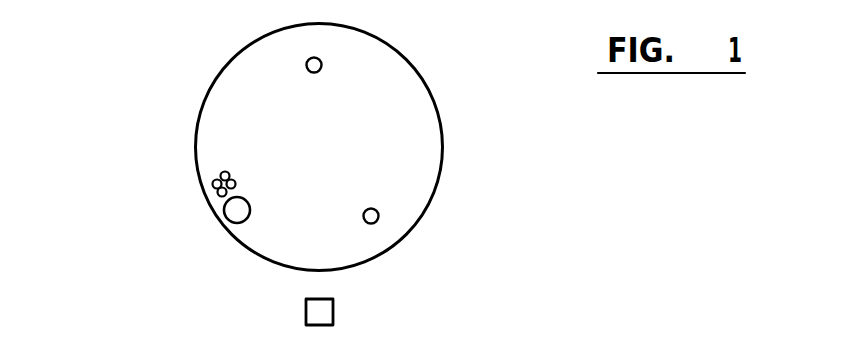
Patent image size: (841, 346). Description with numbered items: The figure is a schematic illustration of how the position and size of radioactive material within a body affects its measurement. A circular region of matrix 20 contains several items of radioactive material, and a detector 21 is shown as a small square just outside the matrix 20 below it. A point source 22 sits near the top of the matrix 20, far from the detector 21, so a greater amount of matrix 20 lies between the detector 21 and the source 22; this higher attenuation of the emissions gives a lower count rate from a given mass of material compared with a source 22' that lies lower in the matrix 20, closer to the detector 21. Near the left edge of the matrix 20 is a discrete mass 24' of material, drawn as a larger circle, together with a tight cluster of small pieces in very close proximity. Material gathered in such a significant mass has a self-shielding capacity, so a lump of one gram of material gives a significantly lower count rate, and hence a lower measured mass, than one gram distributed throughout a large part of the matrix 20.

The matrix 20 is at (335, 162).
The detector 21 is at (320, 312).
The source 22 is at (222, 36).
The source 22' is at (444, 232).
The discrete mass 24' is at (182, 238).